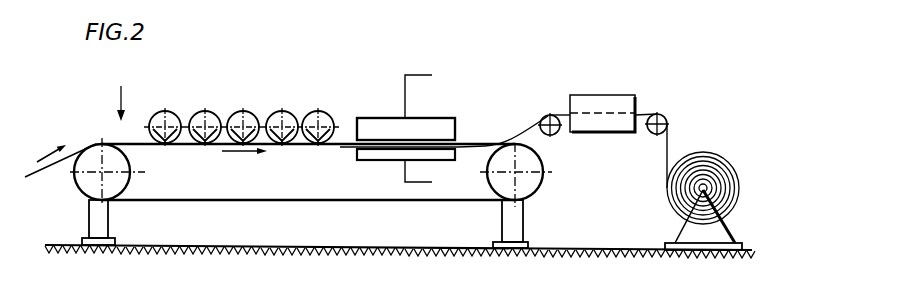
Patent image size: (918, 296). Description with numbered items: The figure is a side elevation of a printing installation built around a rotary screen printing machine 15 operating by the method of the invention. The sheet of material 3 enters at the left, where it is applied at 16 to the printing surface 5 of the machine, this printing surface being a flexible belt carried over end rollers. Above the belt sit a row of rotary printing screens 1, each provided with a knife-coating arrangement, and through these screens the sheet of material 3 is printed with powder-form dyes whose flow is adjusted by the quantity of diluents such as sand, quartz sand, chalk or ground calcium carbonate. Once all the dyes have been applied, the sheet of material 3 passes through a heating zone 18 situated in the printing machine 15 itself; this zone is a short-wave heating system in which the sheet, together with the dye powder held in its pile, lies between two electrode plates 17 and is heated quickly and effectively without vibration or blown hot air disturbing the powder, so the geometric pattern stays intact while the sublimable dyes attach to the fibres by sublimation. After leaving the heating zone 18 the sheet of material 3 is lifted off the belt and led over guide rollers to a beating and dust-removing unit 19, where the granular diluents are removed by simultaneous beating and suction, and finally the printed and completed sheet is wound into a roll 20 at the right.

The printing screens 1 is at (198, 112).
The sheet of material 3 is at (45, 168).
The printing surface 5 is at (150, 200).
The rotary screen printing machine 15 is at (123, 92).
The application point 16 is at (78, 145).
The electrode plates 17 is at (440, 127).
The heating zone 18 is at (366, 112).
The beating and dust-removing unit 19 is at (584, 105).
The roll 20 is at (706, 163).